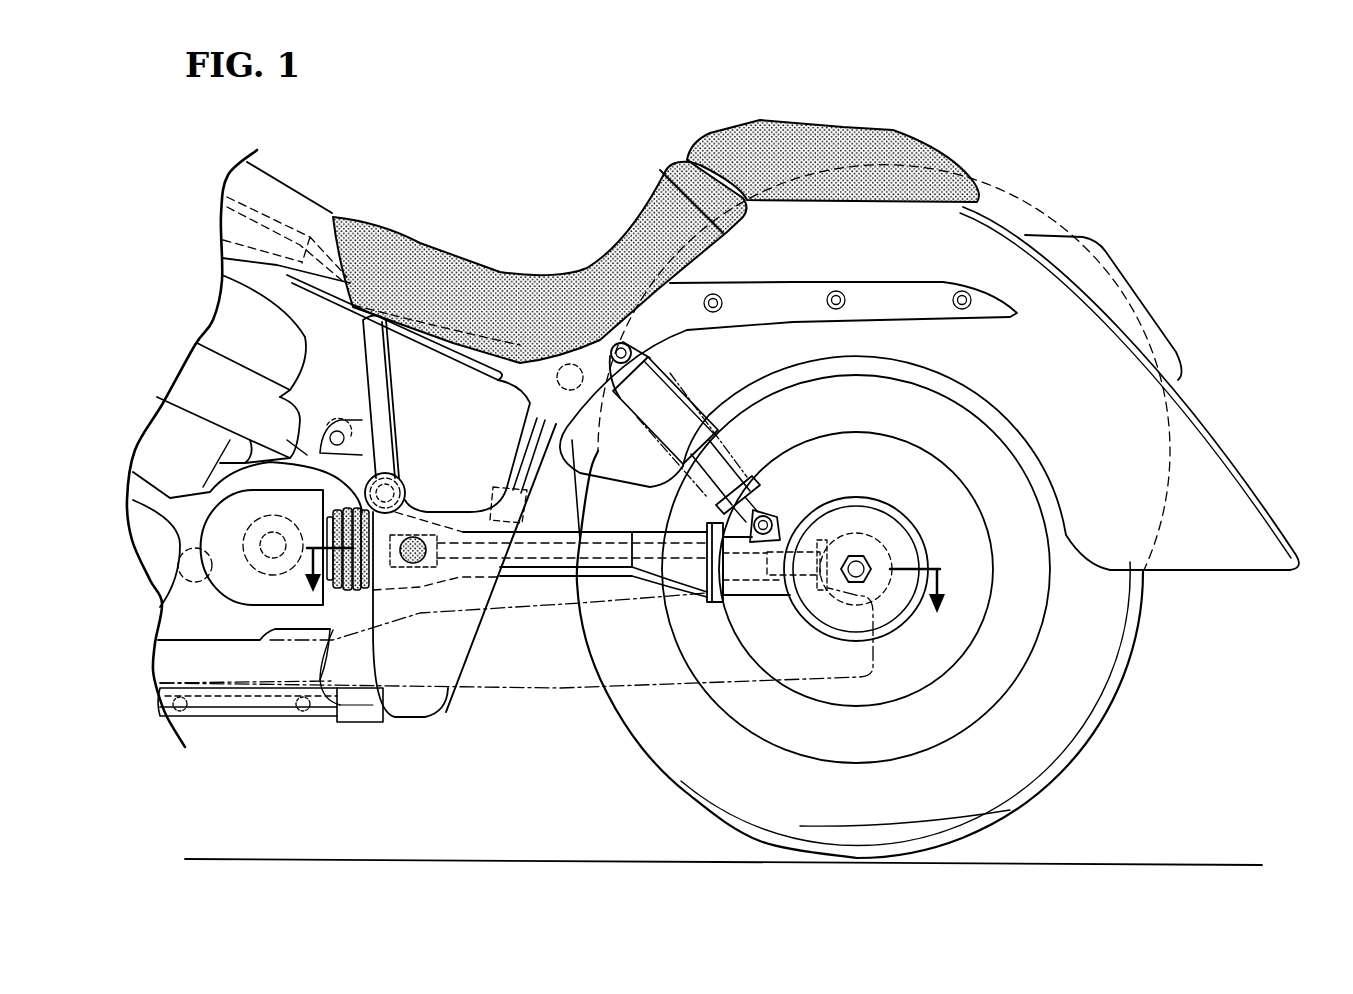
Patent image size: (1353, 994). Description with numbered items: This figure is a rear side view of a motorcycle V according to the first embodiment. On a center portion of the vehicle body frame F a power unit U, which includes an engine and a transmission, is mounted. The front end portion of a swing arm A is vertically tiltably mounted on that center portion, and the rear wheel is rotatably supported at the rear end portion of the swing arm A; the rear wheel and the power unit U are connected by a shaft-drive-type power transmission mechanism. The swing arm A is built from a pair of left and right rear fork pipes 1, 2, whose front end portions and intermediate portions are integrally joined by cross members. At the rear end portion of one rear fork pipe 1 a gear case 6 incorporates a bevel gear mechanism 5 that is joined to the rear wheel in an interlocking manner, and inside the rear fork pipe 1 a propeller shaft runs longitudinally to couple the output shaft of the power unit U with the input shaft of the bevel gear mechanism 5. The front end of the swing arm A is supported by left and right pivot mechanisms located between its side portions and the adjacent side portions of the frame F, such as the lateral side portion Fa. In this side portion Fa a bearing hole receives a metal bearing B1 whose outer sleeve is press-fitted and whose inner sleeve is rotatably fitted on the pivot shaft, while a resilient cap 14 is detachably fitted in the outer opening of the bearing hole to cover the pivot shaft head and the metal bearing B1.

The motorcycle V is at (513, 220).
The vehicle body frame F is at (741, 284).
The gear case 6 is at (745, 622).
The bevel gear mechanism 5 is at (857, 522).
The swing arm A is at (602, 586).
The rear fork pipe 1 is at (568, 533).
The resilient cap 14 is at (408, 565).
The metal bearing B1 is at (446, 507).
The power unit U is at (336, 659).
The lateral side portion of vehicle body frame Fa is at (440, 687).
The rear fork pipe 2 is at (628, 551).